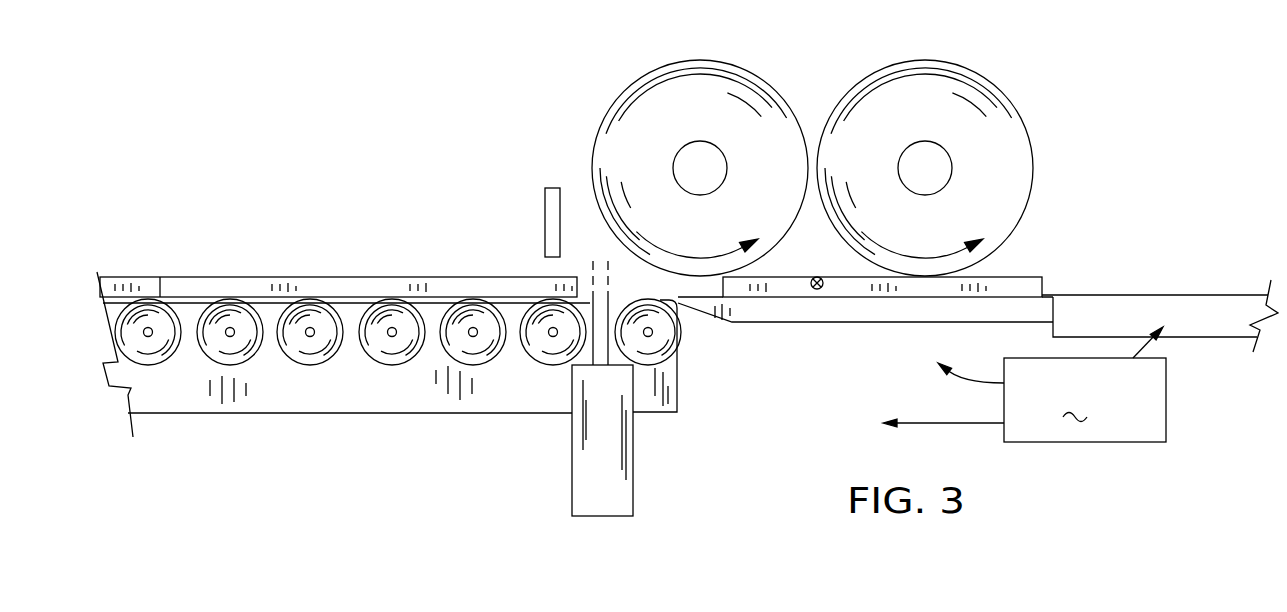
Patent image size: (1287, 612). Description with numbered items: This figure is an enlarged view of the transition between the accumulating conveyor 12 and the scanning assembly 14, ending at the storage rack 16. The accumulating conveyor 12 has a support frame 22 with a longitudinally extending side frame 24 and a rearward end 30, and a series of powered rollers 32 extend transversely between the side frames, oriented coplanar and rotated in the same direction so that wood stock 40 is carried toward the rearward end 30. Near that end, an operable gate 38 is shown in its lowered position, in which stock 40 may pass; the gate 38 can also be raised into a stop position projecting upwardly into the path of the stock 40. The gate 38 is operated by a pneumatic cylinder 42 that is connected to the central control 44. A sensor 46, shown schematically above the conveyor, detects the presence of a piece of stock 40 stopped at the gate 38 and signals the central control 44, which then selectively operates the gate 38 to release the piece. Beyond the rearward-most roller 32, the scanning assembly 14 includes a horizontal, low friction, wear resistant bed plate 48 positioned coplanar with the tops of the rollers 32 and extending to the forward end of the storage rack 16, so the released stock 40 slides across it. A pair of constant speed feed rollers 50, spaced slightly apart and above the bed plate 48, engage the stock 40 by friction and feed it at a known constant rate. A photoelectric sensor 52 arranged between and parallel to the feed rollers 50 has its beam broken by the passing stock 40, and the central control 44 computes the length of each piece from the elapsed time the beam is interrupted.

The accumulating conveyor 12 is at (233, 236).
The scanning assembly 14 is at (560, 128).
The storage rack 16 is at (1258, 152).
The support frame 22 is at (215, 413).
The side frame 24 is at (305, 392).
The rearward end 30 is at (677, 387).
The powered rollers 32 is at (380, 298).
The gate 38 is at (603, 350).
The wood stock 40 is at (467, 280).
The pneumatic cylinder 42 is at (587, 465).
The central control 44 is at (1024, 384).
The sensor 46 is at (550, 223).
The bed plate 48 is at (928, 313).
The feed rollers 50 is at (850, 125).
The sensor 52 is at (815, 290).